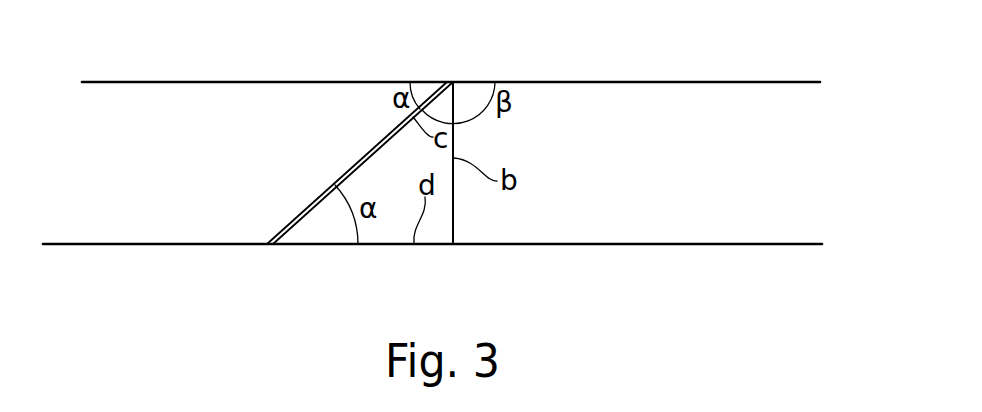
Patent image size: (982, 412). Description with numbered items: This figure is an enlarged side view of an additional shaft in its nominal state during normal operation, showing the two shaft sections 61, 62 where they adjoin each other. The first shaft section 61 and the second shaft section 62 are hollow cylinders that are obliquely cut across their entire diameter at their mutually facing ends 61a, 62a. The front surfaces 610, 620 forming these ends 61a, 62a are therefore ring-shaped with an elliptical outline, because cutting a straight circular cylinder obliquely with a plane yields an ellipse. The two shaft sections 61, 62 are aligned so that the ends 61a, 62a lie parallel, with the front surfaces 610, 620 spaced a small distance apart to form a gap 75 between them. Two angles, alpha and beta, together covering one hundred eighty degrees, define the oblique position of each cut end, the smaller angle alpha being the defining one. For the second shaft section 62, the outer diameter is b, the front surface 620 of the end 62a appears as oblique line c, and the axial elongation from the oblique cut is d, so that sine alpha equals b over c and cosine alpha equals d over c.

The first shaft section 61 is at (141, 245).
The second shaft section 62 is at (658, 235).
The end of first shaft section 61a is at (367, 146).
The end of second shaft section 62a is at (374, 153).
The front surface of first shaft section 610 is at (314, 218).
The front surface of second shaft section 620 is at (390, 120).
The gap 75 is at (459, 72).